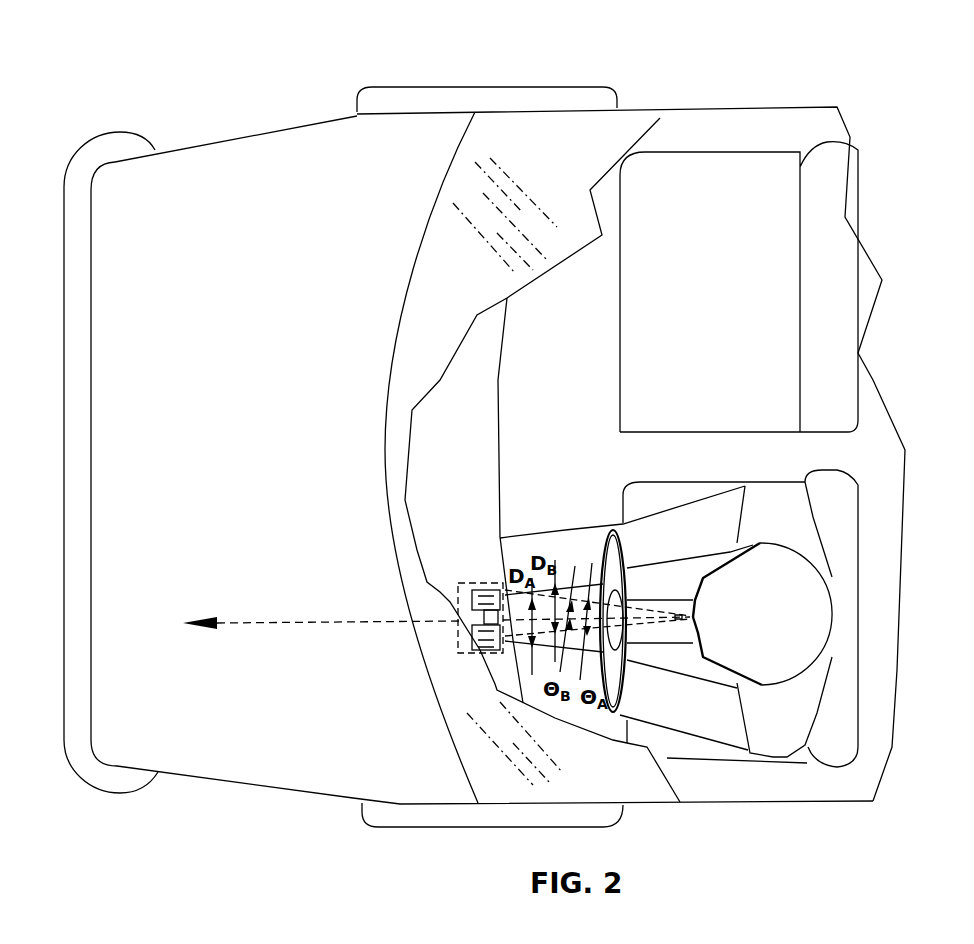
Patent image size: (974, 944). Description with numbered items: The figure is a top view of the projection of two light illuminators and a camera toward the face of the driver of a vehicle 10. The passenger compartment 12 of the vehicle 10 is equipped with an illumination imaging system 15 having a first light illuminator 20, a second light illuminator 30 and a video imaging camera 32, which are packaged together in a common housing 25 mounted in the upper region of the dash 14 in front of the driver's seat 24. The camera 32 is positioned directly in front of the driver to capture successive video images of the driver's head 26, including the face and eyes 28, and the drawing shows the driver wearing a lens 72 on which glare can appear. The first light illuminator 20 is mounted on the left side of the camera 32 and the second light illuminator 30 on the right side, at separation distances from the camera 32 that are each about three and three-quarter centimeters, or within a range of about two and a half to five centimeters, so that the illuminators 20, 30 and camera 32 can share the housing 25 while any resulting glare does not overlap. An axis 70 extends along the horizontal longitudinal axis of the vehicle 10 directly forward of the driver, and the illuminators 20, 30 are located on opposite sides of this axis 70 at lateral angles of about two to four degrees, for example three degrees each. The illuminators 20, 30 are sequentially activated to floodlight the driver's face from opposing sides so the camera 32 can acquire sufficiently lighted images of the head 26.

The vehicle 10 is at (224, 104).
The passenger compartment 12 is at (600, 352).
The dash 14 is at (480, 488).
The illumination imaging system 15 is at (425, 582).
The first light illuminator 20 is at (487, 677).
The driver's seat 24 is at (847, 505).
The common housing 25 is at (460, 640).
The head portion 26 is at (825, 695).
The eyes 28 is at (695, 597).
The second light illuminator 30 is at (497, 582).
The video imaging camera 32 is at (473, 583).
The axis 70 is at (343, 622).
The lens 72 is at (703, 578).